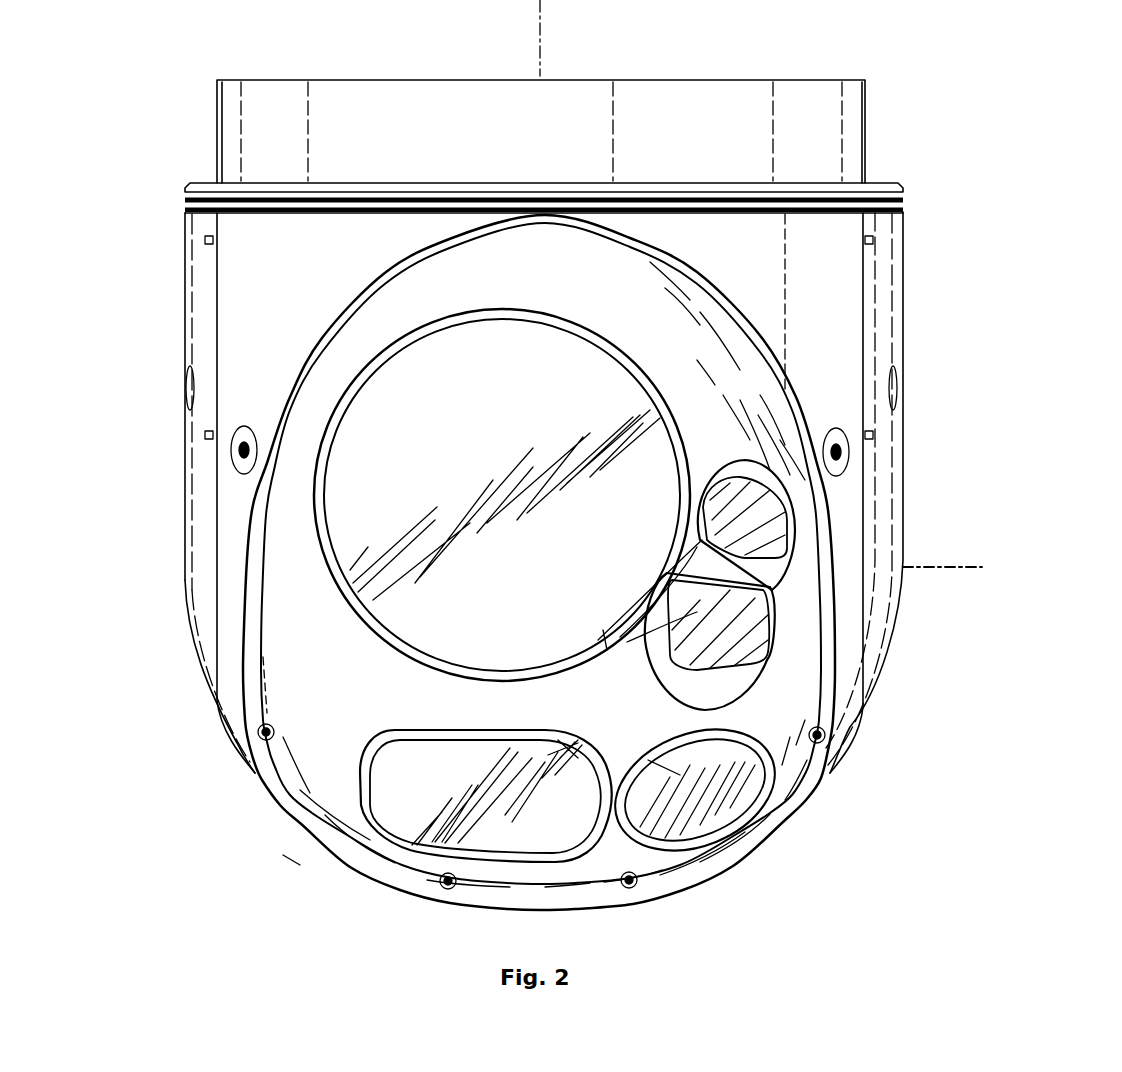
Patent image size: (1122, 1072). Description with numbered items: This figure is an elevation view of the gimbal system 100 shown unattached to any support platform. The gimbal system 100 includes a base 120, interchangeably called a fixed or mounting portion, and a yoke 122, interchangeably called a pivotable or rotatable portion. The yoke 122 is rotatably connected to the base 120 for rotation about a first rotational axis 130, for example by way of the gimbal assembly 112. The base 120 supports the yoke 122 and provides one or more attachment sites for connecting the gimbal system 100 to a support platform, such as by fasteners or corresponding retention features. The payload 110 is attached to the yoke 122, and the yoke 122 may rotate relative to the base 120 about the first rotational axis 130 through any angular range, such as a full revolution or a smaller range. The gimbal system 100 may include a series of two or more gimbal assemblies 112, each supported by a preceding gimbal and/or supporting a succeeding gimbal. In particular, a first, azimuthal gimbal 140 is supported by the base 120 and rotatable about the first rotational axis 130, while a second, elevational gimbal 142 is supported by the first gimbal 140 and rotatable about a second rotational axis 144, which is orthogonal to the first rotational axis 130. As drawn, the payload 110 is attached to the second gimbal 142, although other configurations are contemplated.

The gimbal system 100 is at (132, 90).
The payload 110 is at (432, 447).
The gimbal assembly 112 is at (183, 426).
The base 120 is at (208, 139).
The yoke 122 is at (141, 373).
The first rotational axis 130 is at (545, 55).
The first, azimuthal gimbal 140 is at (184, 530).
The second, elevational gimbal 142 is at (340, 860).
The second rotational axis 144 is at (952, 565).